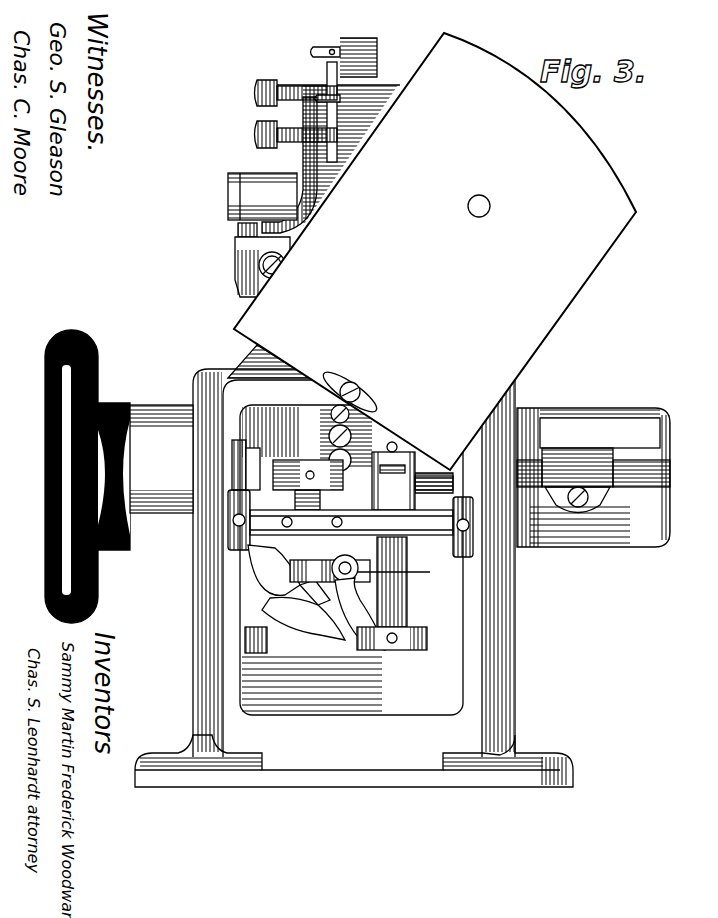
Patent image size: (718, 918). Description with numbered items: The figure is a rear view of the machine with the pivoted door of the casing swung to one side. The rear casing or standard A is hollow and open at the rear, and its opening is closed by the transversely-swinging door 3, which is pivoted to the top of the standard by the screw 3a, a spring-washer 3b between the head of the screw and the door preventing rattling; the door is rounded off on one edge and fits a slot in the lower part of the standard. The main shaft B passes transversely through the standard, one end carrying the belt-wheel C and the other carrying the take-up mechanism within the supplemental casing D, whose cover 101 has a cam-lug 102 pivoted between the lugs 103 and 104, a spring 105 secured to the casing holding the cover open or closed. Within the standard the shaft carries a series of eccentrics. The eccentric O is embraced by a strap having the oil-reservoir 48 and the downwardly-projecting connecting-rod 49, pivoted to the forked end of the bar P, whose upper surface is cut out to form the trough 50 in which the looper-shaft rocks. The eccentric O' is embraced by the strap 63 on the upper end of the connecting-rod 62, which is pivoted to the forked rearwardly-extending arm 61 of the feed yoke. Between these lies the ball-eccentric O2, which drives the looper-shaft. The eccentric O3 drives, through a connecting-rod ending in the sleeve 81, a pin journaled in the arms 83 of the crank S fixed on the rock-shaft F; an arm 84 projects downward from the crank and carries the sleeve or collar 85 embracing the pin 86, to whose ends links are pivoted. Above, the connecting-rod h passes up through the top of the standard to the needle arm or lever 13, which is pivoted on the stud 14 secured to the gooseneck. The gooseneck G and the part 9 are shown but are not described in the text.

The transversely-swinging door 3 is at (435, 251).
The screw 3a is at (356, 384).
The spring-washer 3b is at (345, 385).
The sleeve 81 is at (365, 400).
The eccentric O' is at (300, 462).
The ball-eccentric O2 is at (365, 470).
The arms of the crank 83 is at (260, 473).
The main shaft B is at (430, 470).
The eccentric O is at (466, 511).
The oil-reservoir 48 is at (393, 476).
The crank S is at (351, 521).
The second shaft F is at (410, 545).
The pin 86 is at (397, 577).
The connecting-rod 49 is at (394, 619).
The trough 50 is at (354, 581).
The arm 84 is at (327, 562).
The sleeve or collar 85 is at (302, 592).
The connecting-rod 62 is at (274, 570).
The rearwardly-extending arm 61 is at (270, 610).
The bar P is at (345, 628).
The rear casing or standard A is at (515, 650).
The belt-wheel C is at (108, 537).
The shaft sleeve 9 is at (237, 513).
The supplemental casing D is at (670, 495).
The cover 101 is at (600, 433).
The cam-lug 102 is at (560, 490).
The lug 103 is at (516, 473).
The lug 104 is at (641, 473).
The spring 105 is at (592, 500).
The bracket G is at (382, 95).
The needle arm or lever 13 is at (302, 160).
The stud 14 is at (230, 200).
The connecting-rod h is at (255, 282).
The strap 63 is at (243, 490).
The eccentric O3 is at (230, 553).